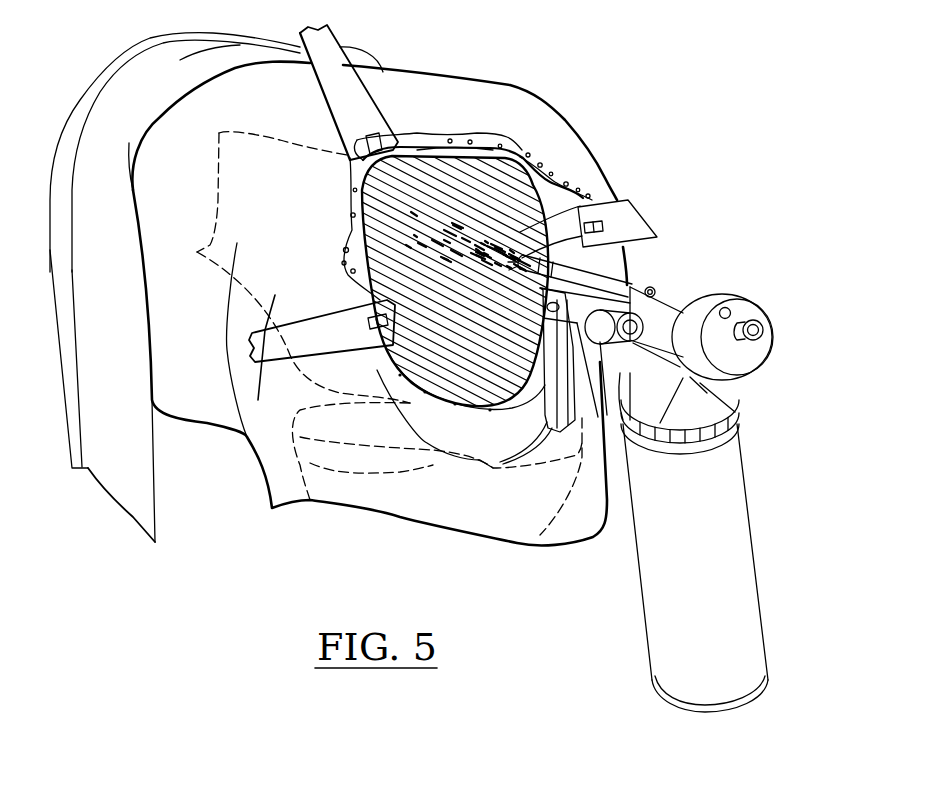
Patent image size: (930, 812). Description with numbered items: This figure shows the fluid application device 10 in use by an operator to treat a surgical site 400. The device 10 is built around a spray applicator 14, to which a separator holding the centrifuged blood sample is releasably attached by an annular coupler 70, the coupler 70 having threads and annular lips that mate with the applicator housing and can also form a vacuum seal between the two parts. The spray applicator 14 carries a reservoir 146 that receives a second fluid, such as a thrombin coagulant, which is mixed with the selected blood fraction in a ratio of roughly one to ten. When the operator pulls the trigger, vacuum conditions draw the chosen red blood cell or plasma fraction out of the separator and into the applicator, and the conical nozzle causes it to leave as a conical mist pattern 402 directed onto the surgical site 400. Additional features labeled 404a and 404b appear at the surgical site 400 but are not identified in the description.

The surgical site 400 is at (527, 160).
The conical mist pattern 402 is at (512, 196).
The drape edge / retention strip 404a is at (520, 206).
The drape retention strip 404b is at (628, 201).
The spray applicator 14 is at (686, 291).
The reservoir 146 is at (752, 310).
The coupler 70 is at (740, 410).
The fluid application device 10 is at (688, 464).